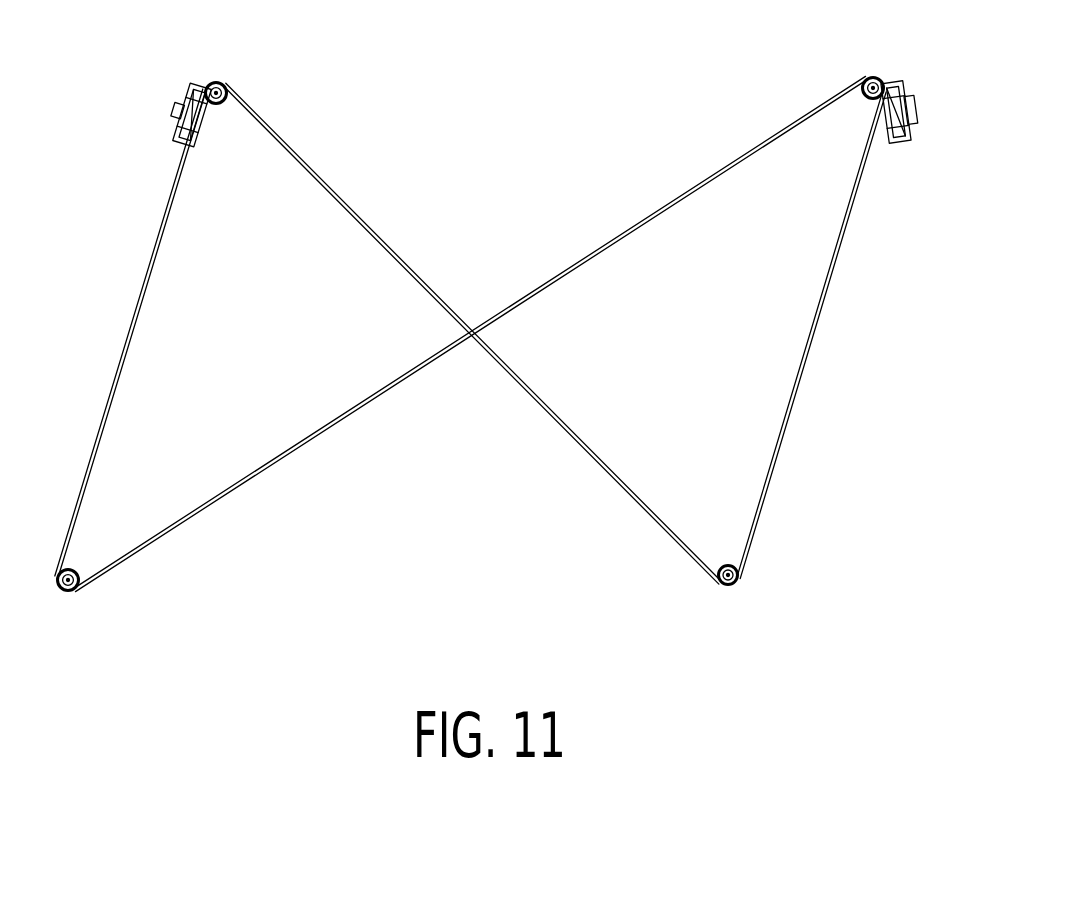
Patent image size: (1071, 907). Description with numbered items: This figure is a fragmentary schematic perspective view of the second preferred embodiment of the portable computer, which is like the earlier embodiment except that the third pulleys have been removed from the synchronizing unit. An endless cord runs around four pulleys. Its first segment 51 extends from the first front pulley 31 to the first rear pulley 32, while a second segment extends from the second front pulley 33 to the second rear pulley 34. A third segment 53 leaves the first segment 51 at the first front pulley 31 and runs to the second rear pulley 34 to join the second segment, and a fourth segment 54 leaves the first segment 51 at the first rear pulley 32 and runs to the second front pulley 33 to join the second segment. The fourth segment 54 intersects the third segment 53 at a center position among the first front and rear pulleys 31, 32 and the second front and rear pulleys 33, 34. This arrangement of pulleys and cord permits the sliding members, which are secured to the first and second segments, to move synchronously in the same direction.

The first front pulley 31 is at (78, 567).
The first rear pulley 32 is at (226, 107).
The second front pulley 33 is at (727, 565).
The second rear pulley 34 is at (860, 100).
The first segment 51 is at (133, 332).
The third segment 53 is at (273, 463).
The fourth segment 54 is at (592, 462).